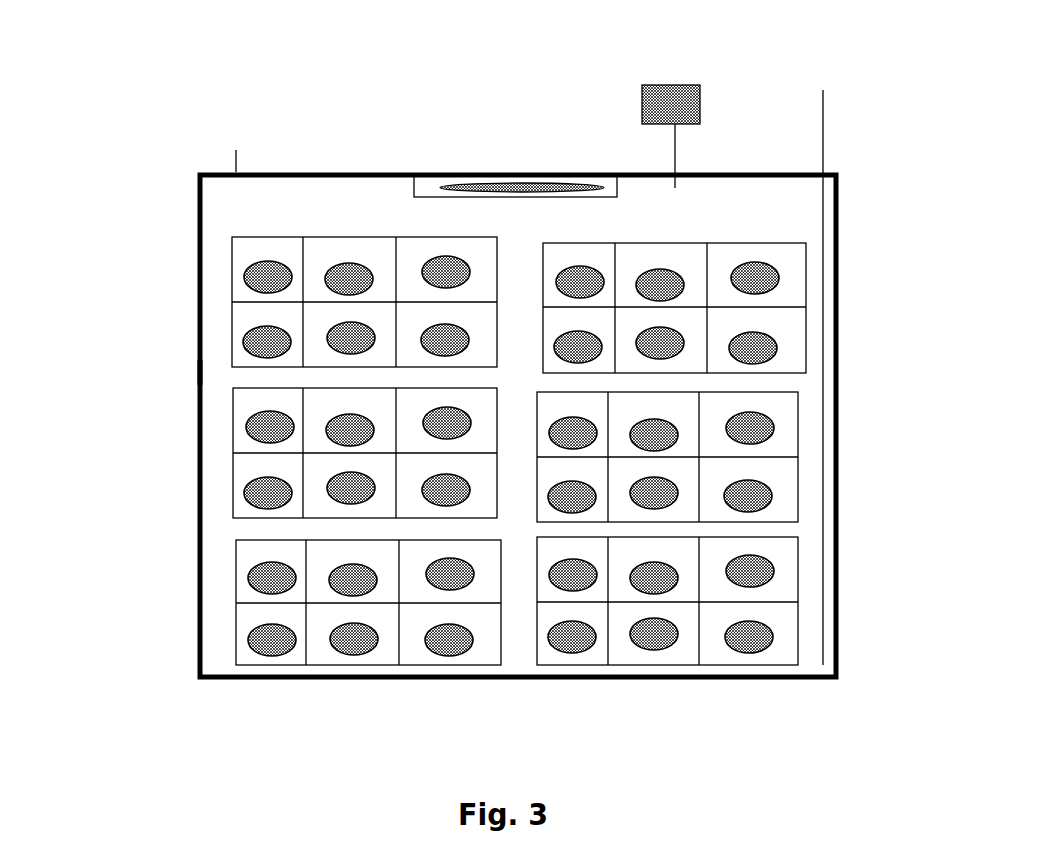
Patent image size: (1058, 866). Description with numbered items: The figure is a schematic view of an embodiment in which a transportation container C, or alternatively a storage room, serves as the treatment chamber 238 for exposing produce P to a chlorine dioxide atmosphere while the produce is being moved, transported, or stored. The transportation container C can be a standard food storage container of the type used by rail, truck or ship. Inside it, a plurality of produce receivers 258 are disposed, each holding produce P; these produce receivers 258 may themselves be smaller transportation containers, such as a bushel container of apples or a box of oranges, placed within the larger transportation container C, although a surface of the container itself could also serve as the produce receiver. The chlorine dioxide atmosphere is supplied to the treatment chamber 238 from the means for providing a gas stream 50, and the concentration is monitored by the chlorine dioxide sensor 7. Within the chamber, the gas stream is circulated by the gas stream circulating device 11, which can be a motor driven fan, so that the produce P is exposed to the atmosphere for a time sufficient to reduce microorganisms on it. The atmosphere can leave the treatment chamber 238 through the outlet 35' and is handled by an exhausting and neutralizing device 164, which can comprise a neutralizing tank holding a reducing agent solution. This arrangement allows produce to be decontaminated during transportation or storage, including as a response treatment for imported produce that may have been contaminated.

The means for providing a gas stream 50 is at (236, 172).
The gas stream circulating device 11 is at (450, 185).
The chlorine dioxide sensor 7 is at (662, 83).
The exhausting and neutralizing device 164 is at (823, 70).
The outlet 35' is at (863, 159).
The treatment chamber 238 is at (837, 240).
The produce receivers 258 is at (232, 284).
The produce P is at (255, 272).
The transportation container C is at (198, 372).